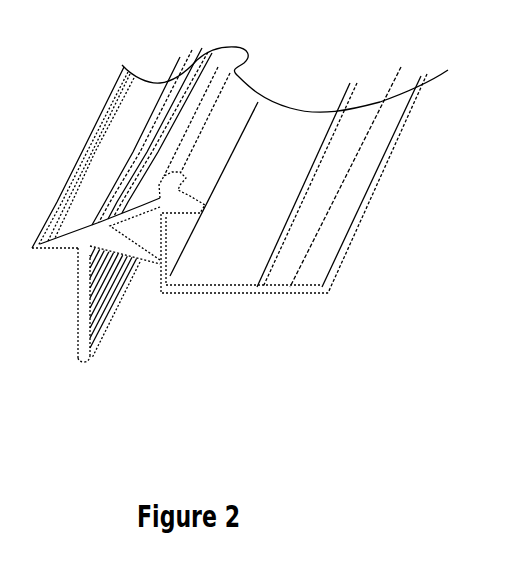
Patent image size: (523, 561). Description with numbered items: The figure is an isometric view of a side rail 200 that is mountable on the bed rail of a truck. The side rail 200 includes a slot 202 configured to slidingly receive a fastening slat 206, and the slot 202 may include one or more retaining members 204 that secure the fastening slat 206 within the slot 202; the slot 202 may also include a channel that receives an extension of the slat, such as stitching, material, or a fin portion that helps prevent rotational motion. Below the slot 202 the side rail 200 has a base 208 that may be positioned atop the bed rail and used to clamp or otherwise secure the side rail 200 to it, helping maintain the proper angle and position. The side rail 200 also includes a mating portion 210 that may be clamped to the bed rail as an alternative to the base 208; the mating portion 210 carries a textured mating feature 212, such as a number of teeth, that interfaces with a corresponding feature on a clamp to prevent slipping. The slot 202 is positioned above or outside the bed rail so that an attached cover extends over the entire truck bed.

The side rail 200 is at (245, 167).
The slot 202 is at (90, 213).
The retaining member 204 is at (68, 222).
The fastening slat 206 is at (79, 295).
The base 208 is at (332, 275).
The mating portion 210 is at (78, 327).
The mating feature 212 is at (104, 322).